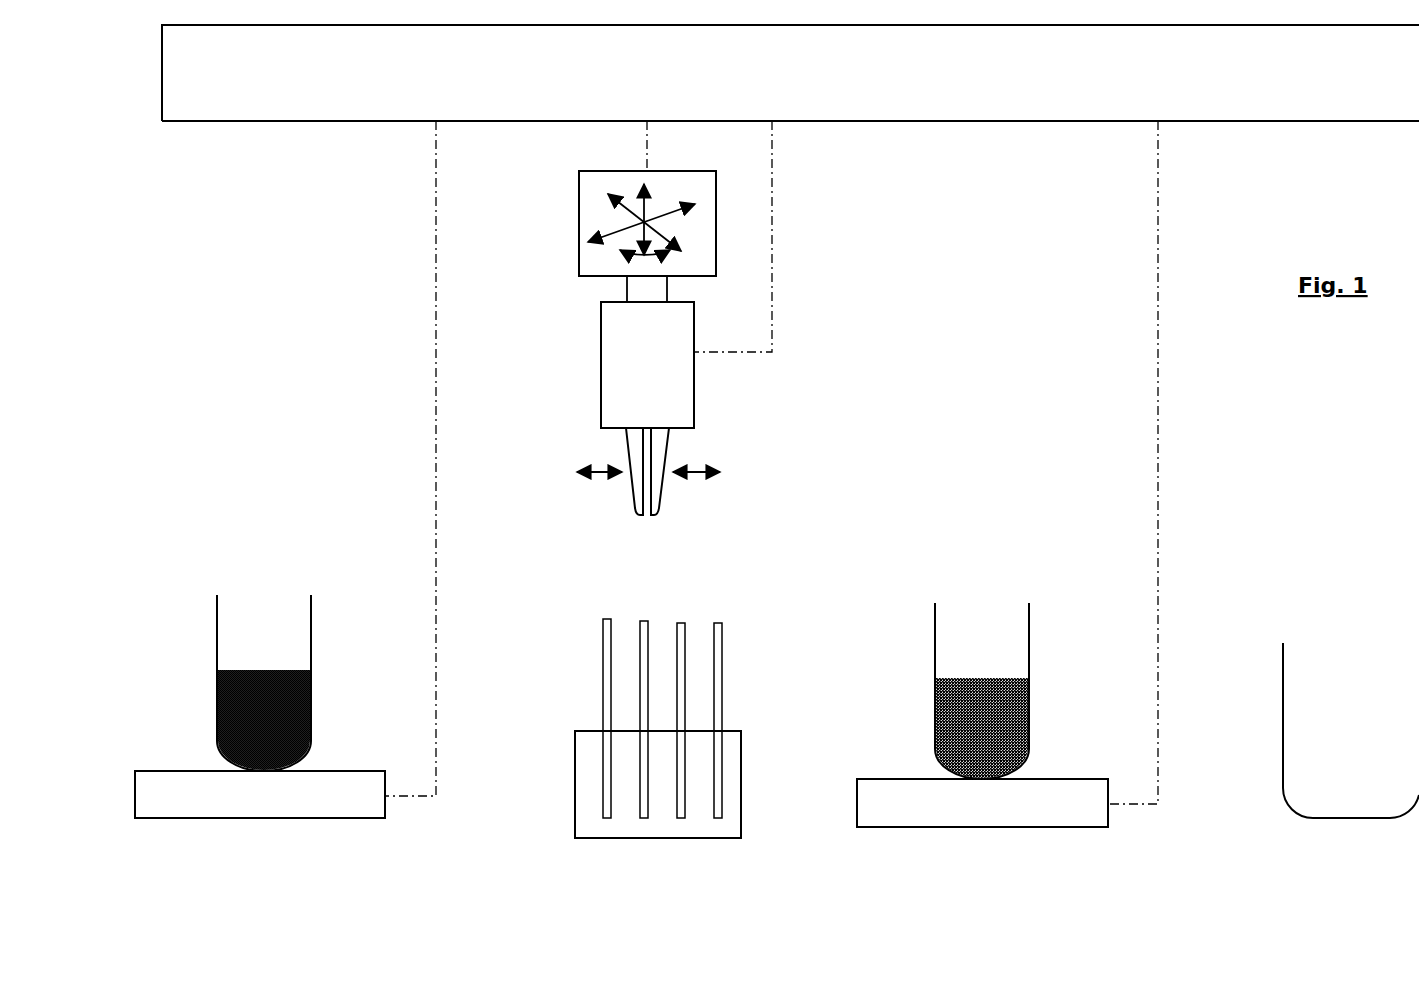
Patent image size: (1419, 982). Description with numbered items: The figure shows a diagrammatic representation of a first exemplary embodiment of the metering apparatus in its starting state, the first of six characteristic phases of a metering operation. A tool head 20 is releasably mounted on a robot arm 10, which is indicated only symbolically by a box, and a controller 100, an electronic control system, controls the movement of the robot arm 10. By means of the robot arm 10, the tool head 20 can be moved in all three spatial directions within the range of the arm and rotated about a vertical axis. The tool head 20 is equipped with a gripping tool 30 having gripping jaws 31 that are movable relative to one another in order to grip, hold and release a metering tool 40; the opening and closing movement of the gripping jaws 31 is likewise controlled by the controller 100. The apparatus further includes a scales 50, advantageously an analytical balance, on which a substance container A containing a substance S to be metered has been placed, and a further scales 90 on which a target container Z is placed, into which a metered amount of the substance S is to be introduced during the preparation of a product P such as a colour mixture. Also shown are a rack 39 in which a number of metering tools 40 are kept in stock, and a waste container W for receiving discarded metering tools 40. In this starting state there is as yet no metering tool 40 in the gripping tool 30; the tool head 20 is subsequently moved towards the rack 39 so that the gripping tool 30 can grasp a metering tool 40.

The controller 100 is at (1025, 88).
The robot arm 10 is at (603, 207).
The tool head 20 is at (620, 380).
The gripping tool 30 is at (665, 474).
The gripping jaws 31 is at (635, 510).
The rack 39 is at (643, 760).
The metering tool 40 is at (602, 705).
The scales 50 is at (222, 802).
The further scales 90 is at (925, 805).
The substance container A is at (272, 683).
The substance S is at (217, 716).
The product P is at (946, 730).
The target container Z is at (990, 691).
The waste container W is at (1280, 663).